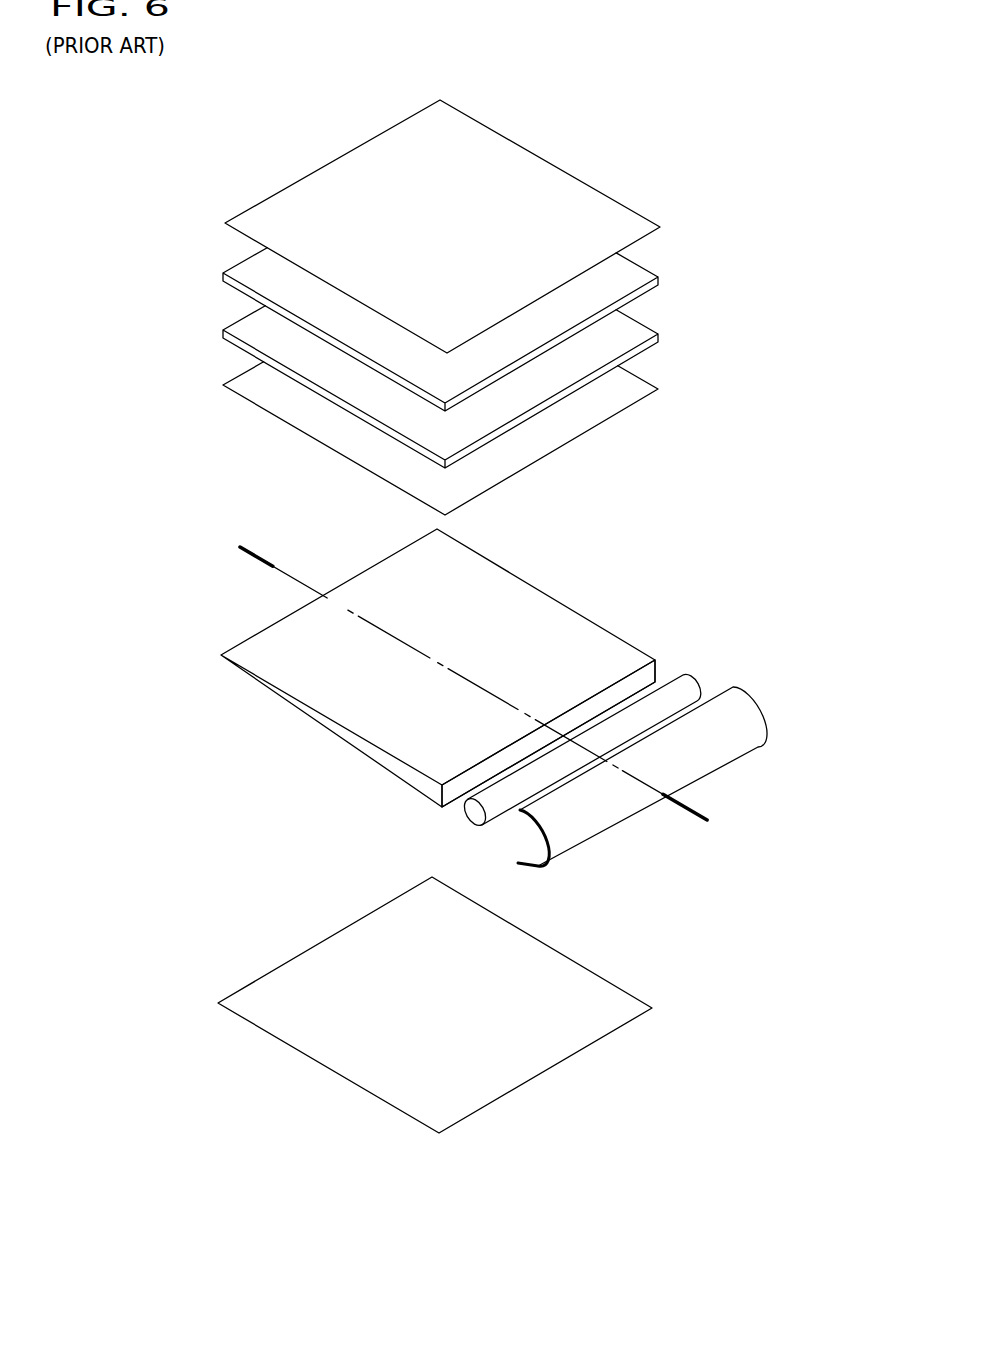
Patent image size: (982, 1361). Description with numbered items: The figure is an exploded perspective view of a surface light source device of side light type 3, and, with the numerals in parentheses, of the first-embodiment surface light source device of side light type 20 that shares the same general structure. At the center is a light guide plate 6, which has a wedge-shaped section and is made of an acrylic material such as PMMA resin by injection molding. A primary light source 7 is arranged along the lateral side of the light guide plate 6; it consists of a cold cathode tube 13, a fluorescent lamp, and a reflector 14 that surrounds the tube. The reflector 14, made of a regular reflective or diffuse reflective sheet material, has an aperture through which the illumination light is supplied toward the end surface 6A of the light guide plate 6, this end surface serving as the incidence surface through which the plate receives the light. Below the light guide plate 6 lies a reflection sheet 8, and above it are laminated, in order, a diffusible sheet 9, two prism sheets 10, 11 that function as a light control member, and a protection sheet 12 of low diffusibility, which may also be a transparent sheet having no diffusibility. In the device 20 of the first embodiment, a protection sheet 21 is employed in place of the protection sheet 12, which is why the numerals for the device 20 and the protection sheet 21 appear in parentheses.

The surface light source device of side light type 3 is at (449, 703).
The surface light source device of side light type 20 is at (148, 1097).
The light guide plate 6 is at (429, 668).
The incidence surface 6A is at (573, 722).
The primary light source 7 is at (317, 520).
The reflection sheet 8 is at (567, 1042).
The diffusible sheet 9 is at (633, 392).
The prism sheet 10 is at (633, 337).
The prism sheet 11 is at (633, 280).
The protection sheet 12 is at (522, 226).
The protection sheet 21 is at (633, 227).
The cold cathode tube 13 is at (463, 812).
The reflector 14 is at (567, 833).